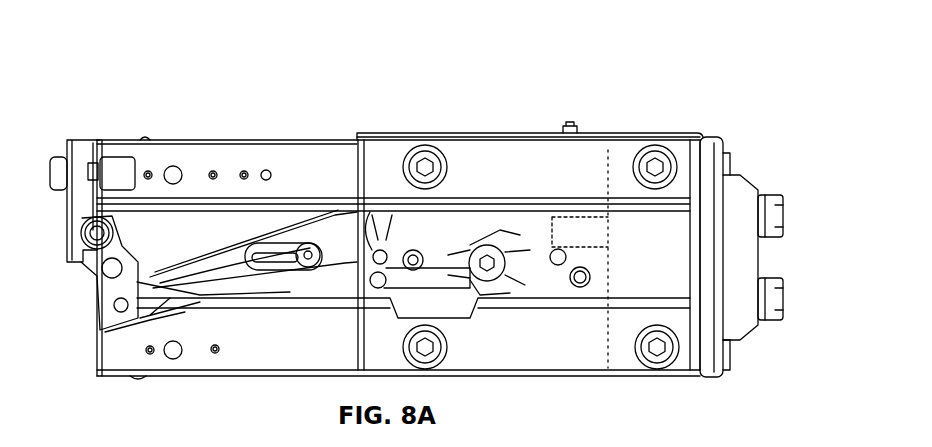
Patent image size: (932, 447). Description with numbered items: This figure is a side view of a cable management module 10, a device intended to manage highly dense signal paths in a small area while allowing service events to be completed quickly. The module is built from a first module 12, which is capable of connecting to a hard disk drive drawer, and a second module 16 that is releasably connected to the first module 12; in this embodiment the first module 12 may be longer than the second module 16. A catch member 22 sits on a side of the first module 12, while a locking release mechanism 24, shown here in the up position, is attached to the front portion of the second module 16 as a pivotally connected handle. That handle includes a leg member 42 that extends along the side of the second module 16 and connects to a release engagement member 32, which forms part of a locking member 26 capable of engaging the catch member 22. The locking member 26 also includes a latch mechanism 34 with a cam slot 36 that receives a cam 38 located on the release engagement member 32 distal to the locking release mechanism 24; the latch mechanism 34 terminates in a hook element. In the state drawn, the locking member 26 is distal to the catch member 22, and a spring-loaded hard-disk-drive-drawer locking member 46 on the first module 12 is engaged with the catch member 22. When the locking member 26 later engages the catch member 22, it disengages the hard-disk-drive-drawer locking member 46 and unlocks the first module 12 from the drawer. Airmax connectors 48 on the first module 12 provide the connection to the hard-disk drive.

The cable management module 10 is at (672, 86).
The first module 12 is at (522, 154).
The second module 16 is at (208, 157).
The catch member 22 is at (382, 250).
The locking release mechanism 24 is at (78, 150).
The locking member 26 is at (228, 265).
The release engagement member 32 is at (148, 310).
The latch mechanism 34 is at (410, 172).
The cam slot 36 is at (268, 260).
The cam 38 is at (298, 252).
The leg member 42 is at (110, 285).
The hard-disk-drive-drawer locking member 46 is at (420, 262).
The airmax connectors 48 is at (776, 213).